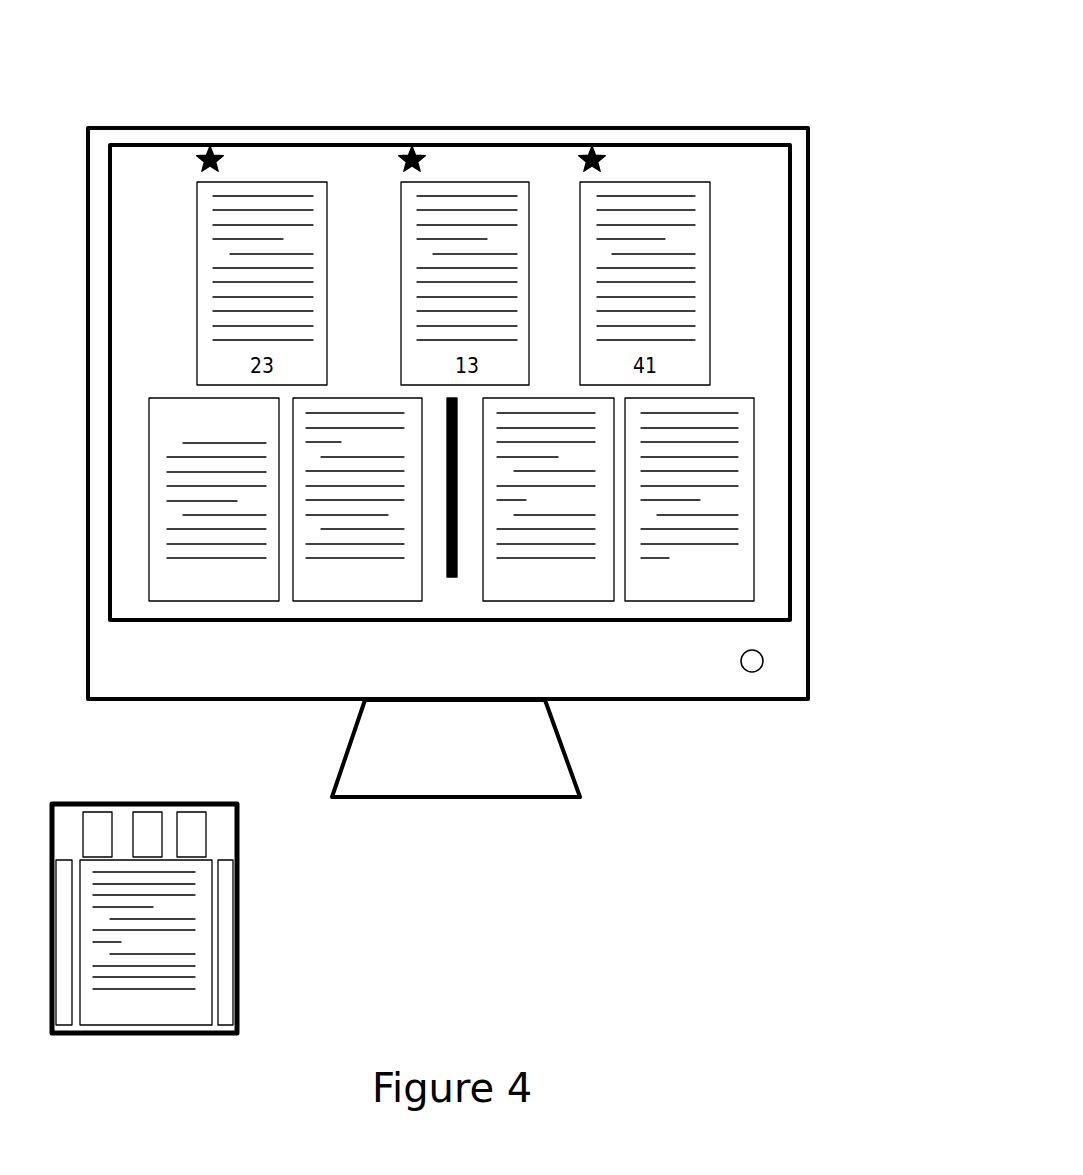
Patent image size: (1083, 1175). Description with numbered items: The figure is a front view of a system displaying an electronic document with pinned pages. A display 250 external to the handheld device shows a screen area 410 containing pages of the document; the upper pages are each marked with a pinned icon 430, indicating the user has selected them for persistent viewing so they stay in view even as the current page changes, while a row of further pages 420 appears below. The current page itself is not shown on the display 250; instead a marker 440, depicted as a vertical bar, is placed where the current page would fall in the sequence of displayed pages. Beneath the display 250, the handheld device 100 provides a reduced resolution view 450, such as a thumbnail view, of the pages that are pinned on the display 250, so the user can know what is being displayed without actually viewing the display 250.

The display 250 is at (705, 128).
The display screen / graphical user interface 410 is at (207, 308).
The document icons in lower row 420 is at (743, 495).
The pinned icon 430 is at (405, 152).
The marker 440 is at (460, 582).
The reduced resolution view 450 is at (193, 845).
The handheld device 100 is at (237, 962).